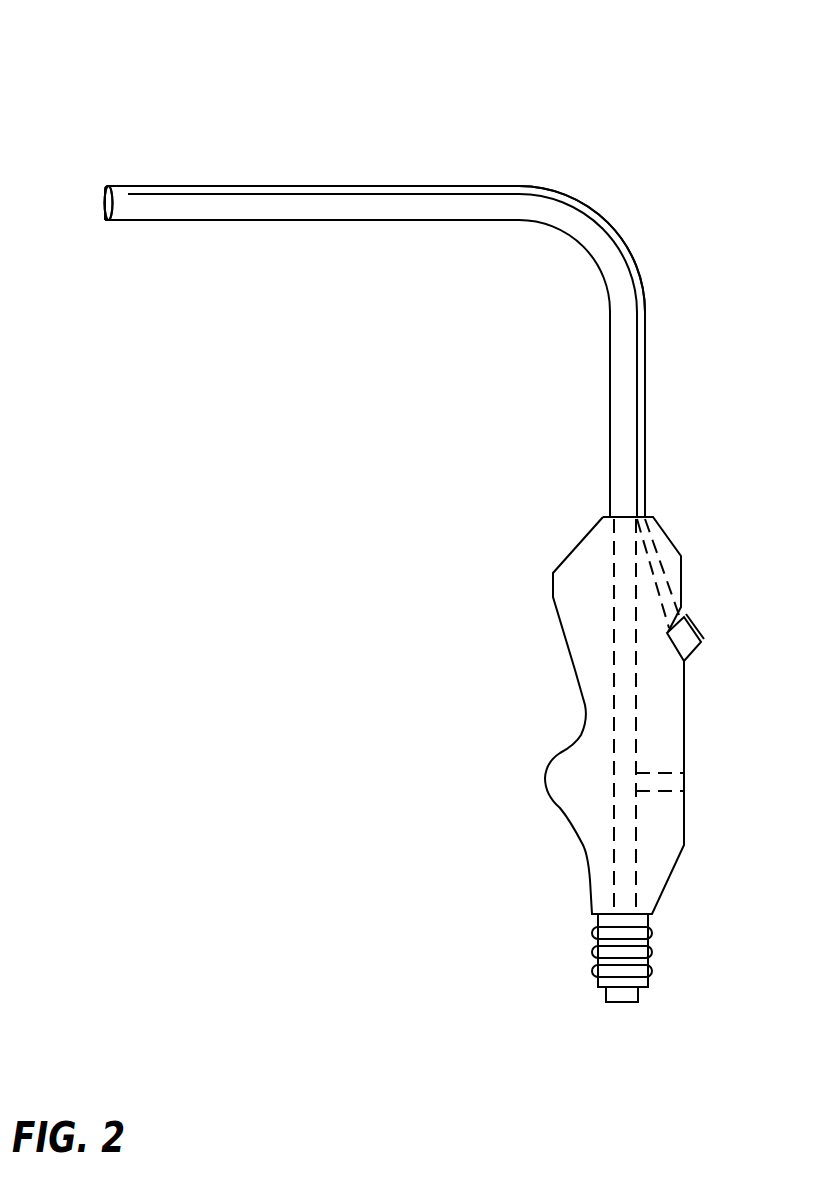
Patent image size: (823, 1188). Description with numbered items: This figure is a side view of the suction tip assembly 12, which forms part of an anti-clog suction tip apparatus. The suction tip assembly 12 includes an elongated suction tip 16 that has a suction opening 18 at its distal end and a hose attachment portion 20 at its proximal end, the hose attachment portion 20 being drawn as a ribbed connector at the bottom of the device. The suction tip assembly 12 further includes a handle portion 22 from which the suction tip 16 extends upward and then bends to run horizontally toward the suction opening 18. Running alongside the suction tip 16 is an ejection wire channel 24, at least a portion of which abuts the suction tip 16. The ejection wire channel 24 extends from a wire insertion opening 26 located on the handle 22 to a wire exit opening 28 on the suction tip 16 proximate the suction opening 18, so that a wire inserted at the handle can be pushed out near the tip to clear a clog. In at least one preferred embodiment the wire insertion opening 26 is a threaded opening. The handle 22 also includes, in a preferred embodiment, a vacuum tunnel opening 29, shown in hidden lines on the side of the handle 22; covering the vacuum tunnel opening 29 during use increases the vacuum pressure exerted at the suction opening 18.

The suction tip assembly 12 is at (44, 51).
The suction tip 16 is at (317, 211).
The suction opening 18 is at (100, 211).
The hose attachment portion 20 is at (620, 972).
The handle portion 22 is at (580, 610).
The ejection wire channel 24 is at (600, 219).
The wire insertion opening 26 is at (688, 655).
The wire exit opening 28 is at (121, 196).
The vacuum tunnel opening 29 is at (684, 782).